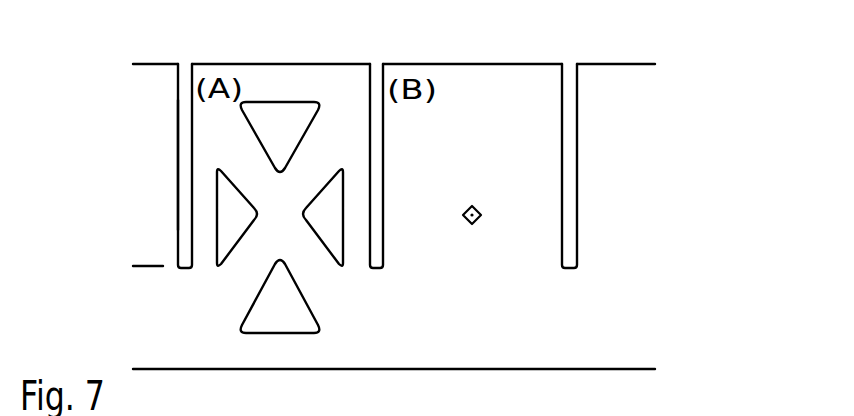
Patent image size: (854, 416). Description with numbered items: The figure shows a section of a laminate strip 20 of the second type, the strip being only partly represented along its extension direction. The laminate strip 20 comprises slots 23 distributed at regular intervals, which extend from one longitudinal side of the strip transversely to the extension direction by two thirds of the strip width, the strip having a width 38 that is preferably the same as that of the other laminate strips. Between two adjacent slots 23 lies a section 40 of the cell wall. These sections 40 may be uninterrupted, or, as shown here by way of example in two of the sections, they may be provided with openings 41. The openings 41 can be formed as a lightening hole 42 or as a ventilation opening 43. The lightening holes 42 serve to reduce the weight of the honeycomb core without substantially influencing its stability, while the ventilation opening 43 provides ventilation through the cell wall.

The laminate strip 20 is at (712, 182).
The slot 23 is at (185, 71).
The width 38 is at (178, 157).
The section 40 is at (286, 77).
The opening 41 is at (268, 121).
The lightening hole 42 is at (302, 121).
The ventilation opening 43 is at (482, 208).